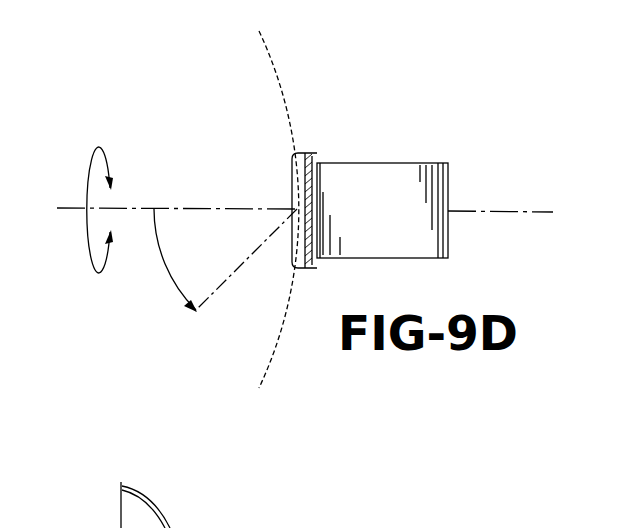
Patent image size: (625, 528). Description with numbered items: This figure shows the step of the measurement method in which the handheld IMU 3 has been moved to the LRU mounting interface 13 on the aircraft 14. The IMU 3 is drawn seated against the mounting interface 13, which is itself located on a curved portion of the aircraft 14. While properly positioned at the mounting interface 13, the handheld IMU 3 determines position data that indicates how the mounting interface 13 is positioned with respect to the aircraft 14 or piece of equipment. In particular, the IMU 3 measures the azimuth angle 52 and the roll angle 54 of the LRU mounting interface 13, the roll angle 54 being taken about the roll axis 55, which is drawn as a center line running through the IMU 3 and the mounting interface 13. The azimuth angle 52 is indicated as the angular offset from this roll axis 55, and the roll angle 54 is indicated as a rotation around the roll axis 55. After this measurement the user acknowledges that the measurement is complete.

The handheld IMU 3 is at (400, 158).
The LRU mounting interface 13 is at (299, 153).
The aircraft 14 is at (268, 56).
The azimuth angle 52 is at (168, 262).
The roll angle 54 is at (88, 168).
The roll axis 55 is at (197, 208).